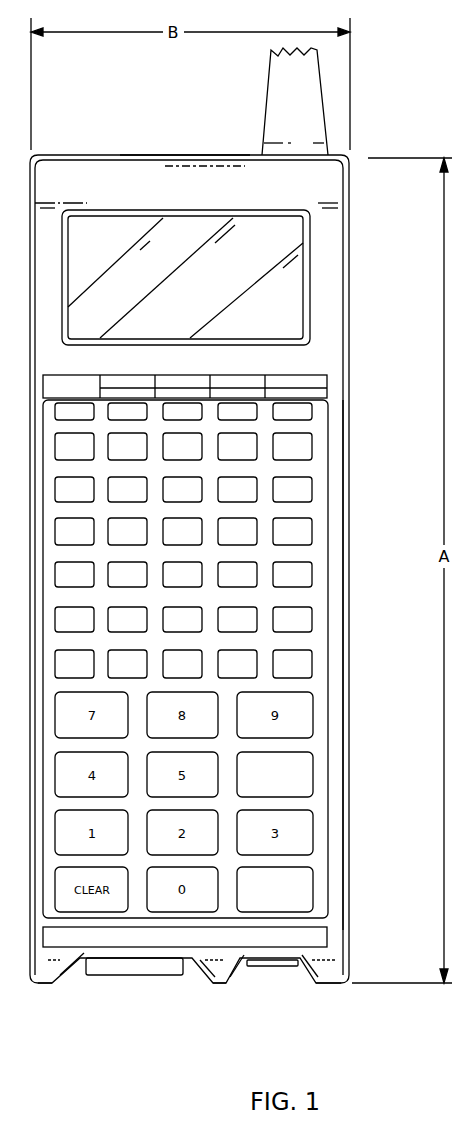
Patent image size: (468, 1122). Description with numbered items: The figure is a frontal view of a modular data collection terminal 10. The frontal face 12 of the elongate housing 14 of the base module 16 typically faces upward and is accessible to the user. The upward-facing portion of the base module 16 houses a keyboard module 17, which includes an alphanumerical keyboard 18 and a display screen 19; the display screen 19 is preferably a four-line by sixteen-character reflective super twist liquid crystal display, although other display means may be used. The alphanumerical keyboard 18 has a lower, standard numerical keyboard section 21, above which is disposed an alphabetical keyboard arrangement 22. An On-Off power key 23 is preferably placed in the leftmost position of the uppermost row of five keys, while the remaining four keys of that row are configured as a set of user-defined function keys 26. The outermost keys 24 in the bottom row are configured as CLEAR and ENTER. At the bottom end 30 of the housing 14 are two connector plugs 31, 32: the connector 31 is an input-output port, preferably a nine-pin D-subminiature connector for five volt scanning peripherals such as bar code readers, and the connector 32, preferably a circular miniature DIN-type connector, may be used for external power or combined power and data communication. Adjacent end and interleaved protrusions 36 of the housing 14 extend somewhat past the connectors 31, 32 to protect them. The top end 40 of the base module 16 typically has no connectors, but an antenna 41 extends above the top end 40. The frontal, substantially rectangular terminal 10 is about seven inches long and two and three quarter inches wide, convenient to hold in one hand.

The data collection terminal unit 10 is at (352, 452).
The frontal face 12 is at (325, 362).
The elongate housing 14 is at (350, 510).
The base module 16 is at (335, 570).
The keyboard module 17 is at (313, 643).
The alphanumerical keyboard 18 is at (313, 687).
The display screen 19 is at (300, 290).
The numerical keyboard section 21 is at (320, 780).
The alphabetical keyboard arrangement 22 is at (313, 597).
The On-Off power key 23 is at (73, 410).
The outermost keys 24 is at (313, 888).
The user-defined function keys 26 is at (182, 410).
The bottom end 30 is at (120, 1052).
The connector plug 31 is at (137, 973).
The connector plug 32 is at (275, 968).
The protrusions 36 is at (40, 984).
The top end 40 is at (153, 152).
The antenna 41 is at (277, 88).